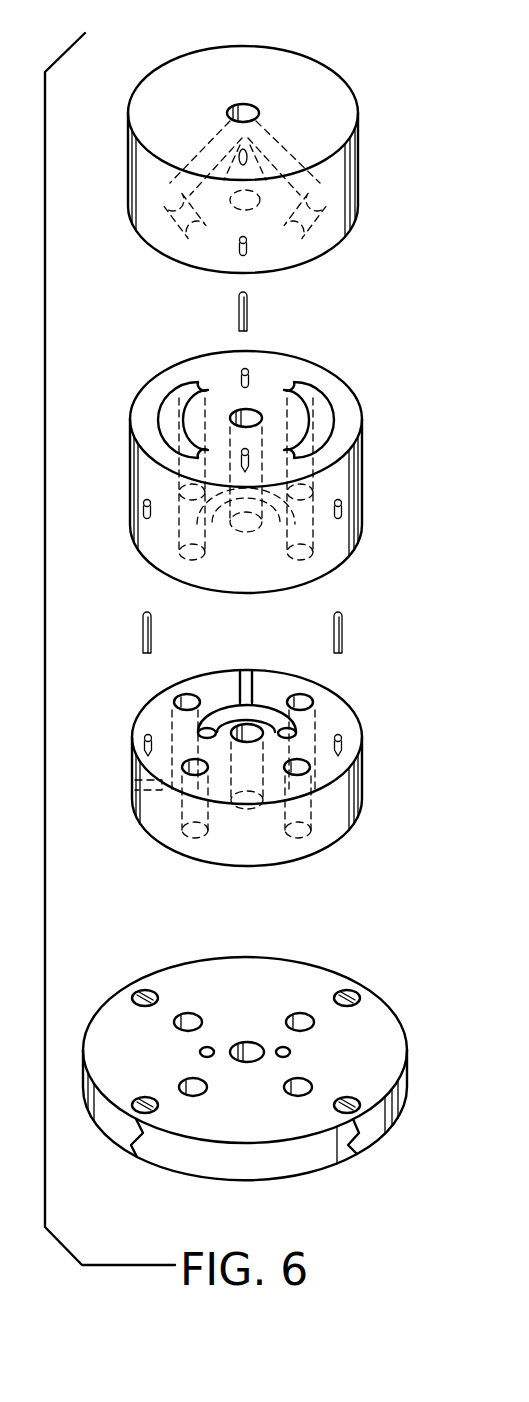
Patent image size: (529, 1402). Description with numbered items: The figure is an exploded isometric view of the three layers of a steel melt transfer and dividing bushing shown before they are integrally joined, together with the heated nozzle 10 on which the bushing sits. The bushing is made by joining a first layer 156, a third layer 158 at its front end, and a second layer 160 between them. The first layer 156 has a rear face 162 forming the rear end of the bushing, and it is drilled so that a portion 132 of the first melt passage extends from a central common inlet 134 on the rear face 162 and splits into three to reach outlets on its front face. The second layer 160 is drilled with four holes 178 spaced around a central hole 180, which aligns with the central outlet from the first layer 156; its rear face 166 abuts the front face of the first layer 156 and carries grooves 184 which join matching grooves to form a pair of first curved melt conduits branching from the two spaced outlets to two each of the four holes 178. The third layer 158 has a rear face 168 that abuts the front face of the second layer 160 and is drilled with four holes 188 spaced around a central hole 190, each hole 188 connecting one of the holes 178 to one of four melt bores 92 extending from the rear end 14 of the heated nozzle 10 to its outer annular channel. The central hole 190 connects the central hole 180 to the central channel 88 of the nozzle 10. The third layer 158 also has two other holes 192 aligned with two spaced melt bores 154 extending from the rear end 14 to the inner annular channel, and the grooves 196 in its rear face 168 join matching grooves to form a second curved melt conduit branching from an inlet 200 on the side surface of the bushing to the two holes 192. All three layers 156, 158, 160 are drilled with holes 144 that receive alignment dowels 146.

The heated nozzle 10 is at (275, 1068).
The rear end 14 is at (385, 1063).
The central channel 88 is at (247, 1048).
The melt bores 92 is at (302, 1016).
The portion of the first melt passage 132 is at (262, 118).
The central common inlet 134 is at (244, 113).
The holes 144 is at (247, 253).
The alignment dowels 146 is at (248, 313).
The spaced melt bores 154 is at (210, 1048).
The first layer 156 is at (282, 155).
The third layer 158 is at (280, 768).
The second layer 160 is at (283, 453).
The rear face 162 is at (325, 86).
The rear face 166 is at (272, 372).
The rear face 168 is at (330, 712).
The holes 178 is at (300, 540).
The central hole 180 is at (240, 410).
The grooves 184 is at (170, 402).
The holes 188 is at (300, 810).
The central hole 190 is at (240, 805).
The other holes 192 is at (200, 732).
The grooves 196 is at (264, 712).
The inlet 200 is at (243, 676).